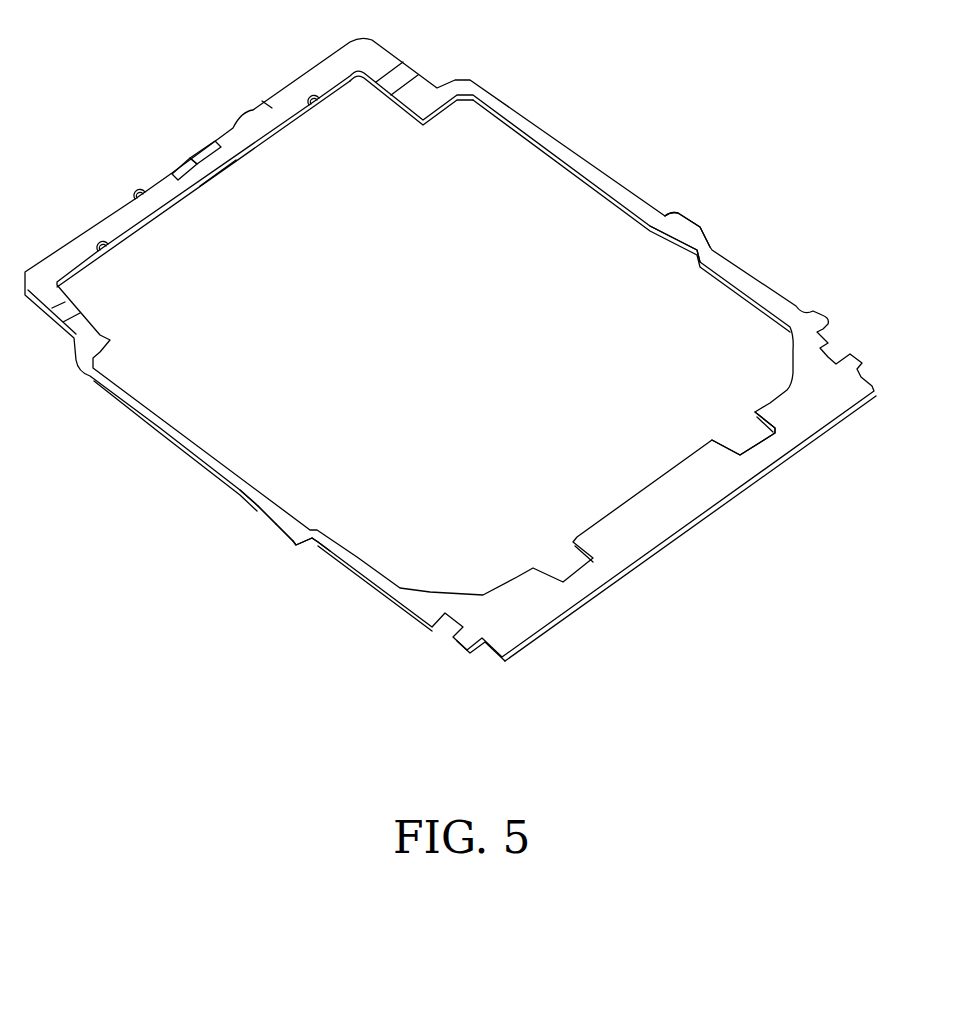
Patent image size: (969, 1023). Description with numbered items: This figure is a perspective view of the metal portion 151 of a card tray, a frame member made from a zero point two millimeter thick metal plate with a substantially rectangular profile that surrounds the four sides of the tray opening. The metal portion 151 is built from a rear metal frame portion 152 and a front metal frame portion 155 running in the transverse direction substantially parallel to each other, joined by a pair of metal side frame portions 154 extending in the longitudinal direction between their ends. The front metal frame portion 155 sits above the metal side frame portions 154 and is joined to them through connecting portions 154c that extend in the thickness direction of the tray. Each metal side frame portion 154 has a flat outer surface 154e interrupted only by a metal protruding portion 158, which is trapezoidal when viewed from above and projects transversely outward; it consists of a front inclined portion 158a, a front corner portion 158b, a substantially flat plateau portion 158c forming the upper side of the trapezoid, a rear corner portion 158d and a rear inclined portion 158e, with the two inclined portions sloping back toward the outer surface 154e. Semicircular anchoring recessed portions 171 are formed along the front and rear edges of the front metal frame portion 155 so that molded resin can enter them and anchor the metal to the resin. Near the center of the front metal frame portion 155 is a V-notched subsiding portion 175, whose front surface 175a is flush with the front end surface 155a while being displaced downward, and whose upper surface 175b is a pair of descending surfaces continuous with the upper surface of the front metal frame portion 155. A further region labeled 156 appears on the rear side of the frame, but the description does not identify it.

The metal portion 151 is at (516, 660).
The rear metal frame portion 152 is at (667, 523).
The metal side frame portions 154 is at (781, 300).
The connecting portions 154c is at (380, 97).
The outer surfaces 154e is at (157, 432).
The front metal frame portion 155 is at (262, 100).
The front end surface 155a is at (310, 67).
The stepped portion 156 is at (673, 433).
The metal protruding portion 158 is at (690, 230).
The front inclined portion 158a is at (262, 512).
The front corner portion 158b is at (279, 540).
The plateau portion 158c is at (288, 545).
The rear corner portion 158d is at (297, 548).
The rear inclined portion 158e is at (312, 547).
The anchoring recessed portions 171 is at (133, 200).
The subsiding portion 175 is at (177, 163).
The front surface 175a is at (195, 147).
The upper surface 175b is at (218, 173).